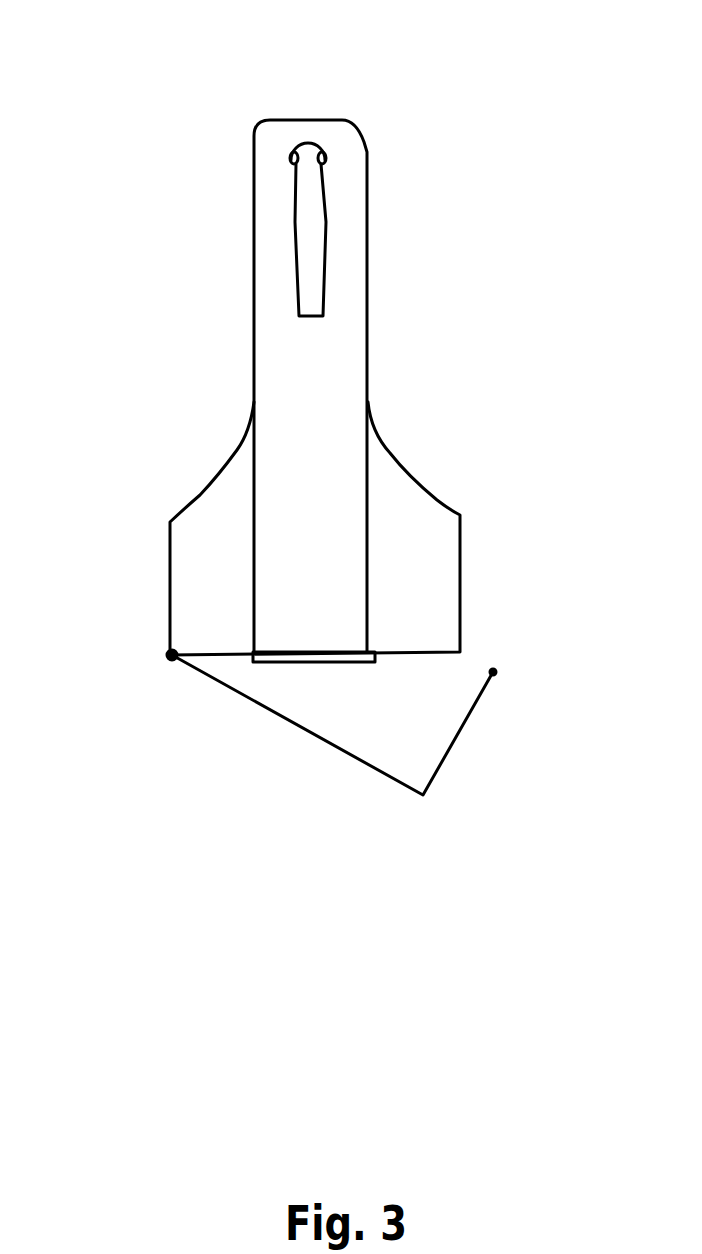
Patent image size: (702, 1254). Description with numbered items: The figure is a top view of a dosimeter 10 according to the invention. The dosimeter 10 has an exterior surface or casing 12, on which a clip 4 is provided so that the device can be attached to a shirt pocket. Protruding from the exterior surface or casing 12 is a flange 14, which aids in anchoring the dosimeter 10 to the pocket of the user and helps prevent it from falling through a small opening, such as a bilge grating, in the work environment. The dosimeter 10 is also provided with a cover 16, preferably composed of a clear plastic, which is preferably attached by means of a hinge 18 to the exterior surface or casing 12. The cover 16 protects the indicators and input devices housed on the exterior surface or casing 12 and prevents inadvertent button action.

The dosimeter 10 is at (524, 0).
The exterior surface or casing 12 is at (367, 308).
The clip 4 is at (307, 192).
The flange 14 is at (415, 535).
The cover 16 is at (337, 750).
The hinge 18 is at (168, 658).